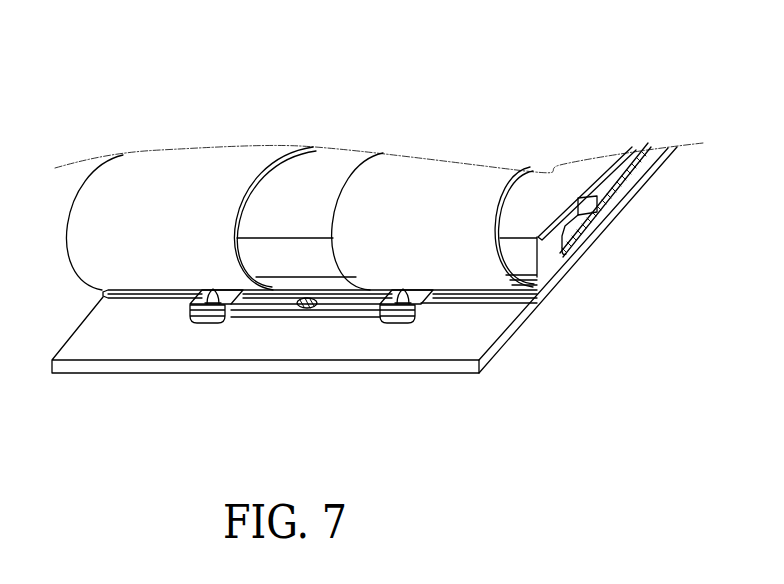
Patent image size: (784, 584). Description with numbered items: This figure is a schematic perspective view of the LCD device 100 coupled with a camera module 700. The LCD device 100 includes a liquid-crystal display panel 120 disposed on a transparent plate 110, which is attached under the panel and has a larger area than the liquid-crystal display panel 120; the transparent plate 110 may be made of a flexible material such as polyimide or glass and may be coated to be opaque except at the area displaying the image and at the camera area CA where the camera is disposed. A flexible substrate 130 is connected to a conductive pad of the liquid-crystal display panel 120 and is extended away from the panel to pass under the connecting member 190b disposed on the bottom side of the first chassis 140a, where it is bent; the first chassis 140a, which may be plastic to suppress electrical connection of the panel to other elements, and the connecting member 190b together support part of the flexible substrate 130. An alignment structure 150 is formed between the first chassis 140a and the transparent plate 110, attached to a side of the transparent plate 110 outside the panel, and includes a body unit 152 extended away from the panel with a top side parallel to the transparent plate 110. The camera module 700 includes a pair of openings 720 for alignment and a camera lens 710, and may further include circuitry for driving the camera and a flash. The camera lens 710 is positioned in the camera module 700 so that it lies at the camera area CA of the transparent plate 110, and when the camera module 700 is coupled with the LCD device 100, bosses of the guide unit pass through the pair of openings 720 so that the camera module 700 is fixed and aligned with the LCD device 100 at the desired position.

The LCD device 100 is at (690, 61).
The transparent plate 110 is at (475, 338).
The liquid-crystal display panel 120 is at (627, 187).
The flexible substrate 130 is at (533, 308).
The first chassis 140a is at (608, 163).
The alignment structure 150 is at (455, 295).
The body unit 152 is at (207, 320).
The connecting member 190b is at (577, 253).
The camera module 700 is at (240, 308).
The camera lens 710 is at (290, 307).
The openings for alignment 720 is at (380, 307).
The camera area CA is at (307, 303).